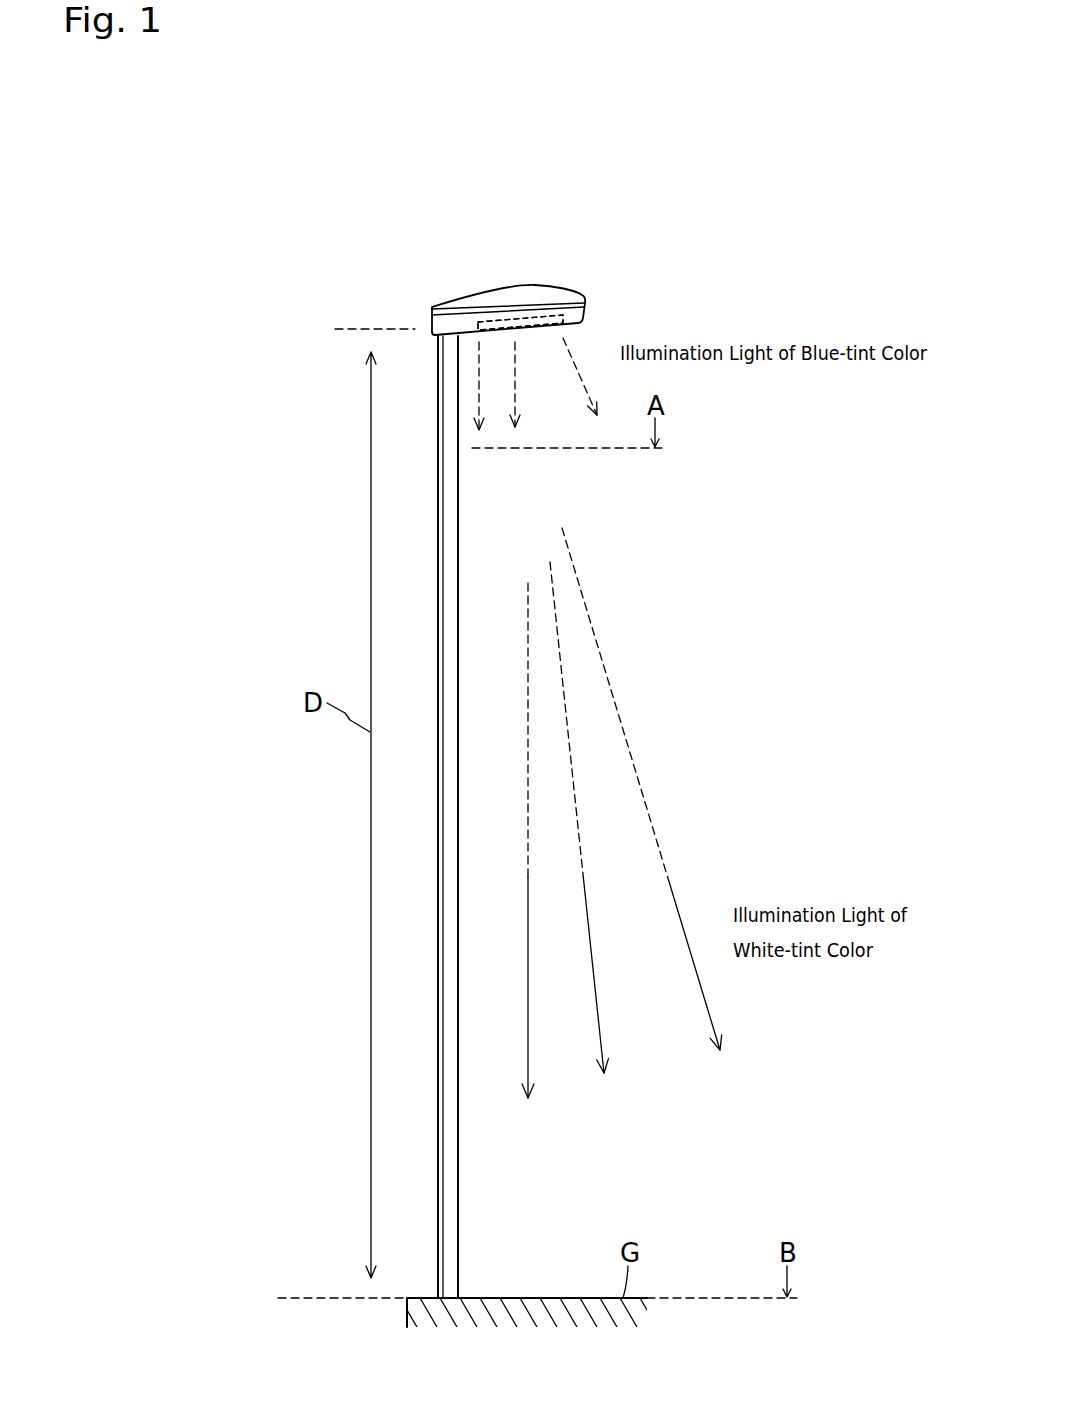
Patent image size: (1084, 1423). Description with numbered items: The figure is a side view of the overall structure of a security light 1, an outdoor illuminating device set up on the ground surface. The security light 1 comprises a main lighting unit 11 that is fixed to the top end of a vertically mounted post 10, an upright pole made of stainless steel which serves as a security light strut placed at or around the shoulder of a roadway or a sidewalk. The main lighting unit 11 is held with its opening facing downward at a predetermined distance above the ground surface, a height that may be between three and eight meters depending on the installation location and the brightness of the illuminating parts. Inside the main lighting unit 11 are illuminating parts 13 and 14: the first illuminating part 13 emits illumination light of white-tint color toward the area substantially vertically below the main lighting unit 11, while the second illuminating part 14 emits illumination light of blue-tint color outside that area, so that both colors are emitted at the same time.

The security light 1 is at (238, 224).
The post 10 is at (458, 542).
The main lighting unit 11 is at (573, 283).
The first illuminating part 13 is at (525, 317).
The second illuminating part 14 is at (520, 322).